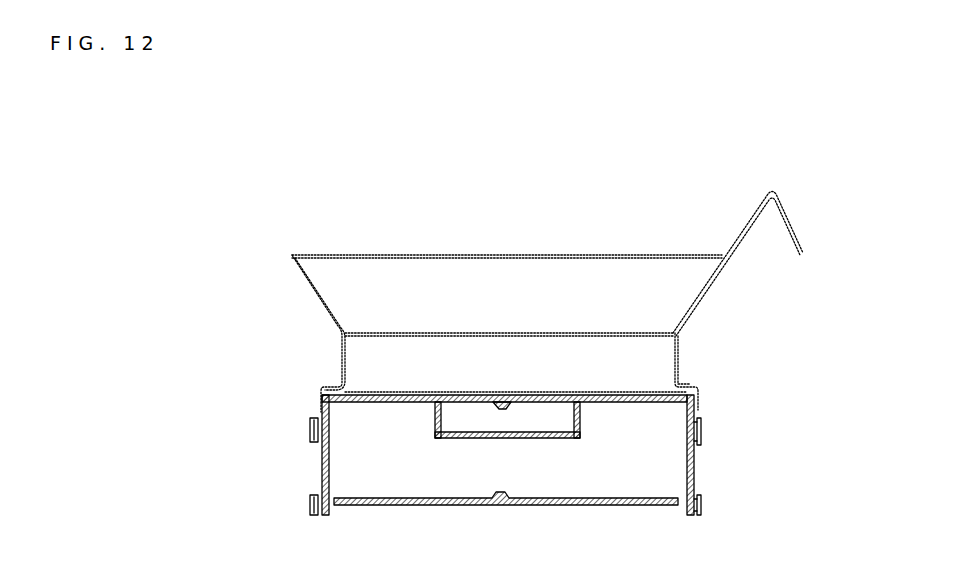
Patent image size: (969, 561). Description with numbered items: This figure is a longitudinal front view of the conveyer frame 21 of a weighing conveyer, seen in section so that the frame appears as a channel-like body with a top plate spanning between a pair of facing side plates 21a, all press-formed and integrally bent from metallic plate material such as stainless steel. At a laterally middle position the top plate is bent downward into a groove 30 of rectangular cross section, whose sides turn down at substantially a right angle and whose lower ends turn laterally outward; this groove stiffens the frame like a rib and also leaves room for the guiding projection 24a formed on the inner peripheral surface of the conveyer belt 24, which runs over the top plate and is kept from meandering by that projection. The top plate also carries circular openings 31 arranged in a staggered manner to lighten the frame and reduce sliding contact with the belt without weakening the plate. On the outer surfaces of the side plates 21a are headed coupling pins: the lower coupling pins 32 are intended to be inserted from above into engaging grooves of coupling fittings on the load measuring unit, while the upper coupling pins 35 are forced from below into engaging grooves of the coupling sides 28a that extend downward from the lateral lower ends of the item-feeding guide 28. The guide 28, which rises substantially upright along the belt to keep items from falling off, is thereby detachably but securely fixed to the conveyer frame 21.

The item-feeding guide 28 is at (703, 296).
The coupling side 28a is at (701, 410).
The conveyer frame 21 is at (318, 452).
The side plate 21a is at (319, 472).
The conveyer belt 24 is at (564, 394).
The guiding projection 24a is at (503, 407).
The groove 30 is at (538, 428).
The circular opening 31 is at (413, 402).
The coupling pin 32 is at (703, 504).
The coupling pin 35 is at (702, 435).